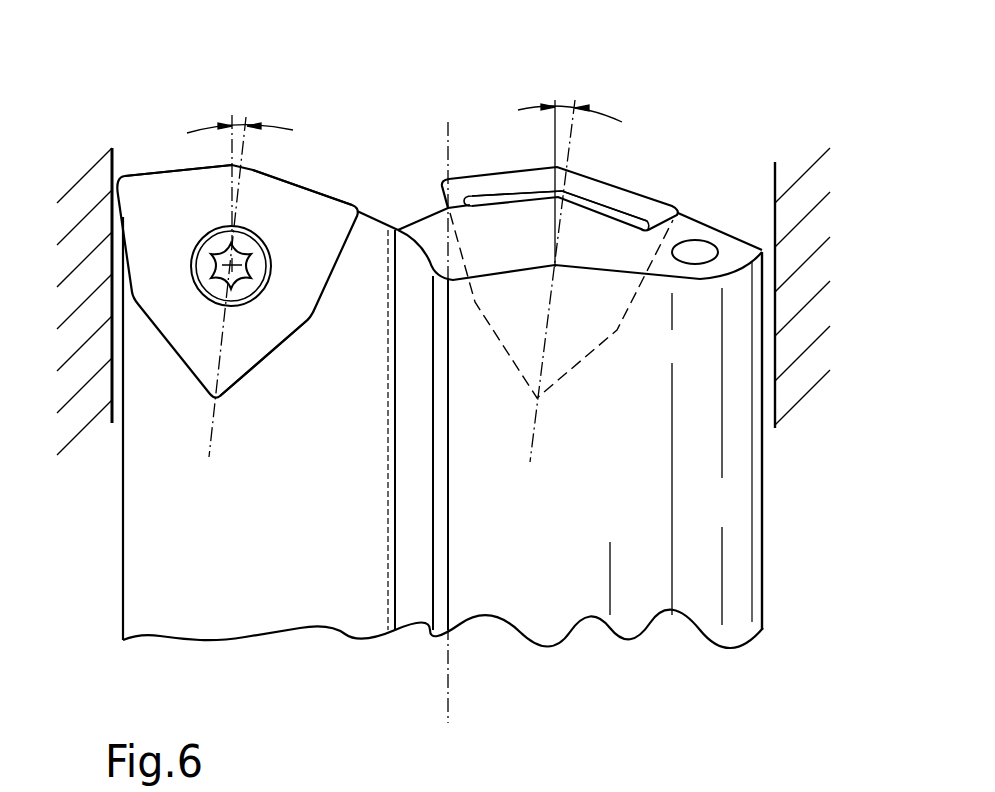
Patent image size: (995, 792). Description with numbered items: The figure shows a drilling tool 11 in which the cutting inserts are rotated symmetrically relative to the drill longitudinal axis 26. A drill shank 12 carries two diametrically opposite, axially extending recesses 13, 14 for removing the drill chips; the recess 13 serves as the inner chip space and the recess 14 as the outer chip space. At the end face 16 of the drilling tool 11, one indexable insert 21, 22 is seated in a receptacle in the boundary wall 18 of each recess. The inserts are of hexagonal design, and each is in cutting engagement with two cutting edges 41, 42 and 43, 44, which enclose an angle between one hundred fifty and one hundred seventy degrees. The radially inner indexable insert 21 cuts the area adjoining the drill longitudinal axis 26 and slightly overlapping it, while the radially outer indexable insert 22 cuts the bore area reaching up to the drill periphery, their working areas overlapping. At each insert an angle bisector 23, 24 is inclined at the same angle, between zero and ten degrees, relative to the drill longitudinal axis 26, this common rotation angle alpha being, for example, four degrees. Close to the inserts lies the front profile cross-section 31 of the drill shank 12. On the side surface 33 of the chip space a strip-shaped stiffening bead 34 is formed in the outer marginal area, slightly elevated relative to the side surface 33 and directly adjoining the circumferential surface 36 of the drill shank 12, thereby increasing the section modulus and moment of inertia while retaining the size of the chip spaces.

The drilling tool 11 is at (689, 646).
The drill shank 12 is at (793, 513).
The recess (inner chip space) 13 is at (677, 128).
The recess (outer chip space) 14 is at (252, 641).
The end face 16 is at (376, 208).
The boundary wall 18 is at (147, 538).
The indexable insert (radially inner) 21 is at (621, 327).
The indexable insert (radially outer) 22 is at (252, 378).
The angle bisector 23 is at (533, 440).
The angle bisector 24 is at (207, 467).
The drill longitudinal axis 26 is at (448, 710).
The front profile cross-section 31 is at (265, 79).
The side surface 33 is at (392, 540).
The stiffening bead 34 is at (440, 563).
The circumferential surface 36 is at (762, 470).
The cutting edge 41 is at (512, 170).
The cutting edge 42 is at (608, 183).
The cutting edge 43 is at (153, 170).
The cutting edge 44 is at (303, 180).